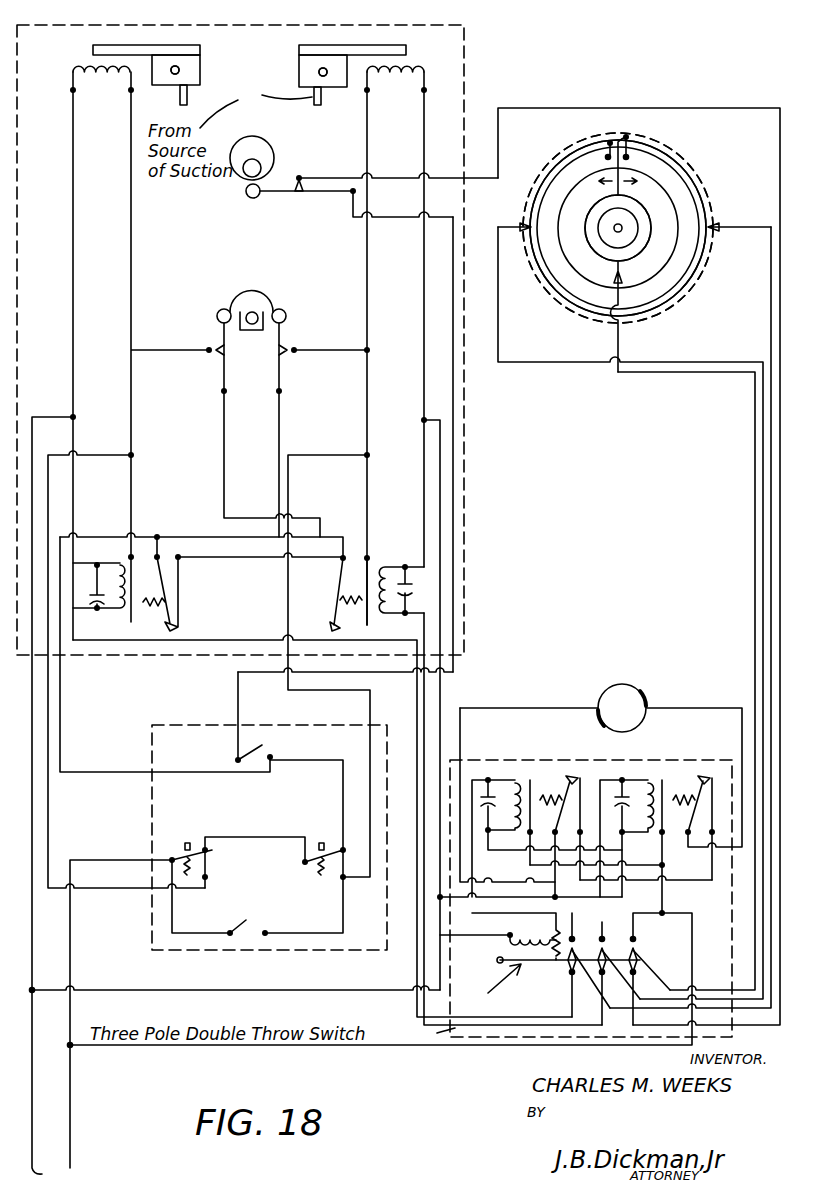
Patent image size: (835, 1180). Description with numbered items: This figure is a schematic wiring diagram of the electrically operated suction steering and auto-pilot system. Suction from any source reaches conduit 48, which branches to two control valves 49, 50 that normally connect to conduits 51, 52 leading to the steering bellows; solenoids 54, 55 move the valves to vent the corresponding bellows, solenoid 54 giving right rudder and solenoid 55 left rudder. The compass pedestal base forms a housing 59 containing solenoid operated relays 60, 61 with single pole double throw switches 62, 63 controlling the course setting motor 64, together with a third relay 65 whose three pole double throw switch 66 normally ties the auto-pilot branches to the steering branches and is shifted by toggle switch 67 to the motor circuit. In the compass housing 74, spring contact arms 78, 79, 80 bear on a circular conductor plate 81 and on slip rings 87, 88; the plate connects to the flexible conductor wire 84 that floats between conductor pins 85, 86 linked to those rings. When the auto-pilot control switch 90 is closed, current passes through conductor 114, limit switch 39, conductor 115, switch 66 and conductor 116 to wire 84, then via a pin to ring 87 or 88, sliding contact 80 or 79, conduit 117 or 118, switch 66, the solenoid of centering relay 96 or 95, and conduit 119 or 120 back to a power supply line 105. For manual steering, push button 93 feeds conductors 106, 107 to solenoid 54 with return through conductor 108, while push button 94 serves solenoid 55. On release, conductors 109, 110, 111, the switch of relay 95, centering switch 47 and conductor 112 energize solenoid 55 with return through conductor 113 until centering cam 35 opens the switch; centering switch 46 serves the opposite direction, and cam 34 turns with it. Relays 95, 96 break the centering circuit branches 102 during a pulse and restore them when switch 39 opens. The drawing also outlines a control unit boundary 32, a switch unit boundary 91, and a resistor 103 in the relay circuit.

The control unit (dashed enclosure) 32 is at (464, 478).
The cam 34 is at (265, 143).
The centering cam 35 is at (250, 291).
The limit switch 39 is at (280, 193).
The centering switch 46 is at (220, 361).
The centering switch 47 is at (286, 361).
The conduit 48 is at (256, 106).
The control valve 49 is at (200, 62).
The control valve 50 is at (299, 58).
The conduit 51 is at (173, 76).
The conduit 52 is at (326, 77).
The solenoid 54 is at (73, 70).
The solenoid 55 is at (424, 70).
The housing 59 is at (498, 1042).
The solenoid operated relay 60 is at (499, 767).
The solenoid operated relay 61 is at (651, 776).
The single pole double throw switch 62 is at (567, 778).
The single pole double throw switch 63 is at (705, 781).
The course setting motor 64 is at (613, 690).
The solenoid operated relay 65 is at (554, 983).
The three pole double throw switch 66 is at (530, 953).
The toggle switch 67 is at (241, 925).
The housing 74 is at (682, 291).
The spring contact arm 78 is at (622, 272).
The spring contact arm 79 is at (520, 222).
The spring contact arm 80 is at (720, 223).
The circular conductor plate 81 is at (597, 250).
The flexible conductor wire 84 is at (618, 142).
The conductor pin 85 is at (605, 161).
The conductor pin 86 is at (628, 160).
The conductor slip ring 87 is at (560, 167).
The conductor slip ring 88 is at (682, 178).
The auto-pilot control switch 90 is at (262, 746).
The control switch unit (dashed enclosure) 91 is at (150, 728).
The push button steering switch 93 is at (187, 843).
The push button steering switch 94 is at (311, 845).
The centering circuit relay 95 is at (112, 548).
The centering circuit relay 96 is at (397, 558).
The centering circuit branch 102 is at (276, 403).
The resistor 103 is at (602, 922).
The power supply line 105 is at (235, 798).
The conductor 106 is at (50, 838).
The conductor 107 is at (131, 243).
The conductor 108 is at (73, 235).
The conductor 109 is at (250, 830).
The conductor 110 is at (343, 784).
The conductor 111 is at (60, 739).
The conductor 112 is at (367, 258).
The conductor 113 is at (424, 292).
The conductor 114 is at (455, 397).
The conductor 115 is at (538, 109).
The conductor 116 is at (760, 489).
The conduit 117 is at (768, 572).
The conduit 118 is at (755, 525).
The conduit 119 is at (428, 706).
The conduit 120 is at (417, 699).